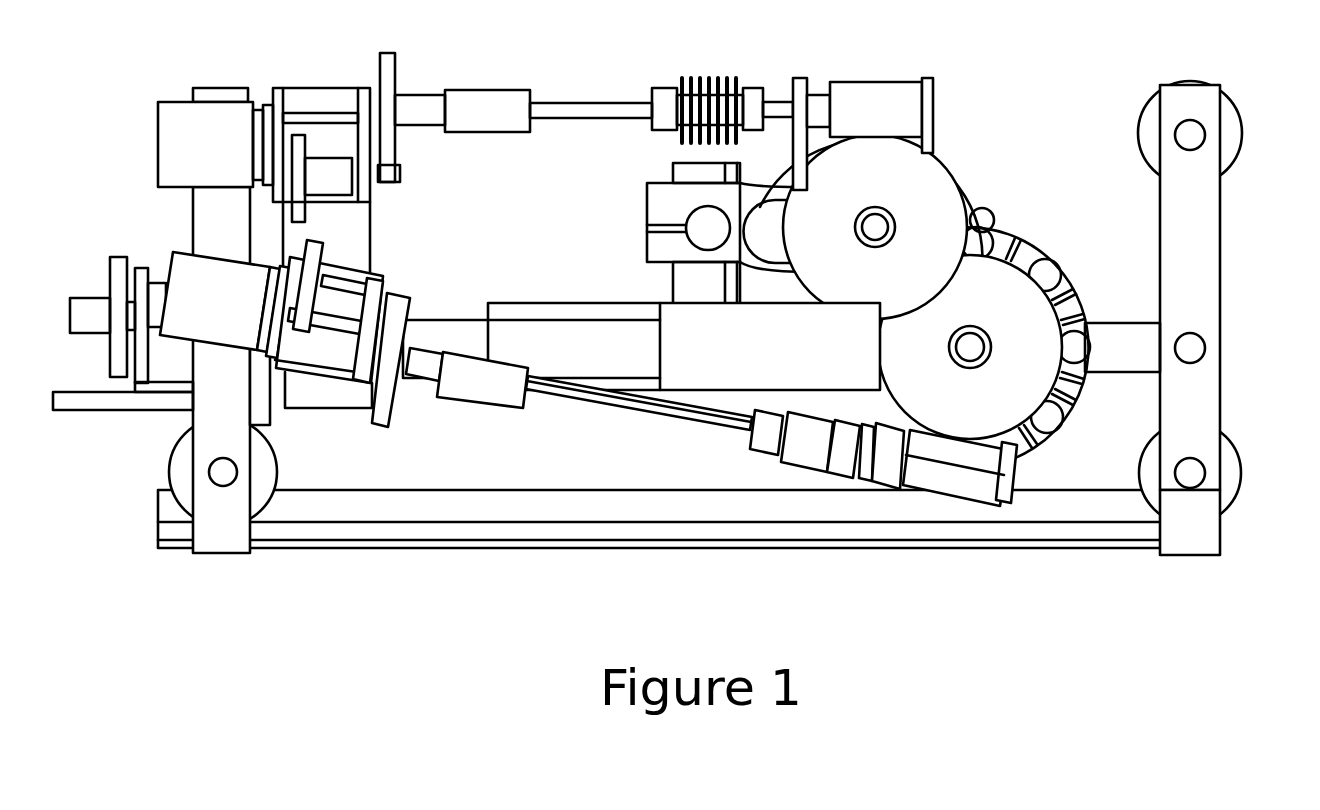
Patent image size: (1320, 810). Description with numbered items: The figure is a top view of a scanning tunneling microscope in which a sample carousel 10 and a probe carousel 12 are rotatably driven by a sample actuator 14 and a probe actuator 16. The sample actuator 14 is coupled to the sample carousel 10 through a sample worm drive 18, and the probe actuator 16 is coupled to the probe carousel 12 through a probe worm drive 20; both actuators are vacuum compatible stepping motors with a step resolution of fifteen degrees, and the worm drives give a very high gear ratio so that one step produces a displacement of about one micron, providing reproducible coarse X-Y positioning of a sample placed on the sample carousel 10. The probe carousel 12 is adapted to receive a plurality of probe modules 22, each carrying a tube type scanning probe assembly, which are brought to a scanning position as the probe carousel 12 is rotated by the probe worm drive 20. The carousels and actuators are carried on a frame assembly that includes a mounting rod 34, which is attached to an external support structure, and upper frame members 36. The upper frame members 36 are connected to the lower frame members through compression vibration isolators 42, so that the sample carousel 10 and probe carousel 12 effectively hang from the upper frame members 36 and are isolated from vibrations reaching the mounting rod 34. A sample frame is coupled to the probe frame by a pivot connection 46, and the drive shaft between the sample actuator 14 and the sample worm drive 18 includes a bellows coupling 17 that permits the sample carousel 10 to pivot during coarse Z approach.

The sample carousel 10 is at (965, 150).
The probe carousel 12 is at (1030, 252).
The sample actuator 14 is at (172, 146).
The probe actuator 16 is at (195, 270).
The bellows coupling 17 is at (718, 84).
The sample worm drive 18 is at (893, 92).
The probe worm drive 20 is at (960, 480).
The probe module 22 is at (1040, 425).
The mounting rod 34 is at (645, 537).
The upper frame member 36 is at (208, 410).
The compression vibration isolator 42 is at (190, 97).
The pivot connection 46 is at (655, 180).